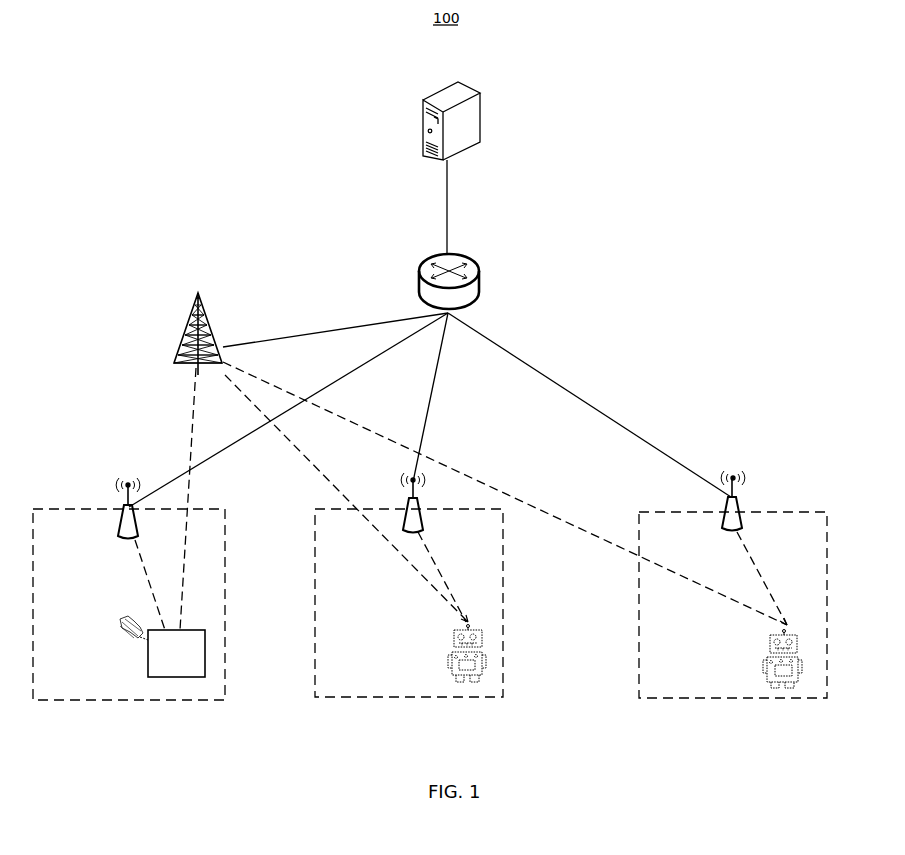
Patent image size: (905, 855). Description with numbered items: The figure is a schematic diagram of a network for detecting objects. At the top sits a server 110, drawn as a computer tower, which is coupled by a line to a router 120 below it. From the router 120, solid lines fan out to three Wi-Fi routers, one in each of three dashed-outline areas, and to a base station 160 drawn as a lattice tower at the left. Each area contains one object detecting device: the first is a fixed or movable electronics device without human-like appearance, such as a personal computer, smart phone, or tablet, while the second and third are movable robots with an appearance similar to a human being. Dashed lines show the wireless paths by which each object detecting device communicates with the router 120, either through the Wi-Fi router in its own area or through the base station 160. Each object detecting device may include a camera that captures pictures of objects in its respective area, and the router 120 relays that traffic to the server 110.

The server 110 is at (482, 99).
The router 120 is at (480, 278).
The base station 160 is at (203, 313).